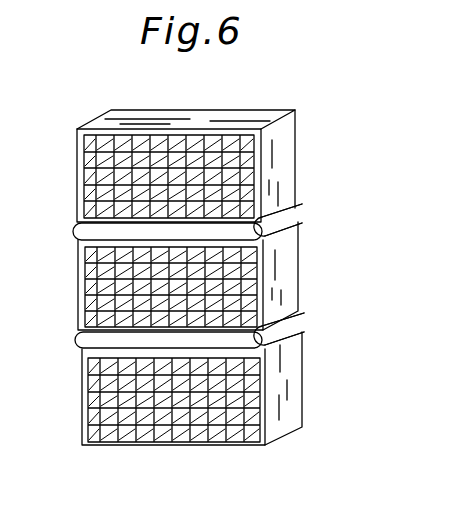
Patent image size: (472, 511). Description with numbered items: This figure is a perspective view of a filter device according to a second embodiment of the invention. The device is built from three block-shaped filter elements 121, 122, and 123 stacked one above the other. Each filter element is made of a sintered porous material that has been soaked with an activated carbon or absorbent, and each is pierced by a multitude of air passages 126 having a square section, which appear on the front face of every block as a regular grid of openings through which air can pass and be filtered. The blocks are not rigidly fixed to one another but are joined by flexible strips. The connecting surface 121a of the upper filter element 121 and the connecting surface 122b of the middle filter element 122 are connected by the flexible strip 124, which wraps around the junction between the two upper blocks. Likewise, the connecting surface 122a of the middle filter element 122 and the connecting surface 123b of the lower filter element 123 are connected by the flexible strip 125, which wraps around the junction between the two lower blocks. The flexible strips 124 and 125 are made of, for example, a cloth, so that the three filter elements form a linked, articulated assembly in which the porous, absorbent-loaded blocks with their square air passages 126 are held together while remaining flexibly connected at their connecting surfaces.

The filter element 121 is at (217, 152).
The connecting surface 121a is at (296, 210).
The filter element 122 is at (285, 283).
The connecting surface 122a is at (296, 323).
The connecting surface 122b is at (292, 222).
The filter element 123 is at (296, 404).
The connecting surface 123b is at (294, 336).
The flexible strip 124 is at (83, 233).
The flexible strip 125 is at (83, 343).
The air passages 126 is at (142, 175).